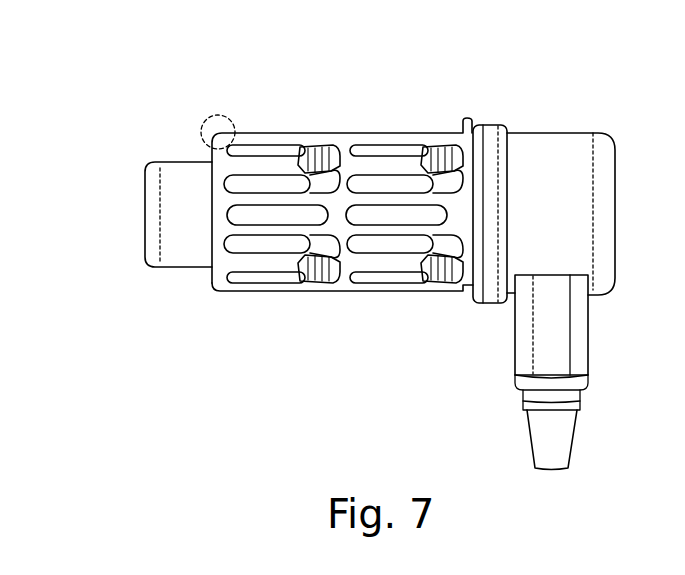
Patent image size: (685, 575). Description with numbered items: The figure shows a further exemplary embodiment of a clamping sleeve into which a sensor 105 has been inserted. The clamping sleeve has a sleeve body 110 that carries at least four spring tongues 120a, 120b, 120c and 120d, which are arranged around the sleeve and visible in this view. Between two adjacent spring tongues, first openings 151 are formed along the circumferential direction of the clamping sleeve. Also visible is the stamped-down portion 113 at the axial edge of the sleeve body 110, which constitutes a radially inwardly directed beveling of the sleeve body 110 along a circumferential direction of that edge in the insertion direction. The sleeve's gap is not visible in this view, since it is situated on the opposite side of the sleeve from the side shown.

The sensor 105 is at (581, 114).
The sleeve body 110 is at (347, 142).
The stamped-down portion 113 is at (222, 115).
The spring tongue 120a is at (262, 258).
The spring tongue 120b is at (430, 262).
The spring tongue 120c is at (428, 150).
The spring tongue 120d is at (302, 146).
The first openings 151 is at (228, 215).